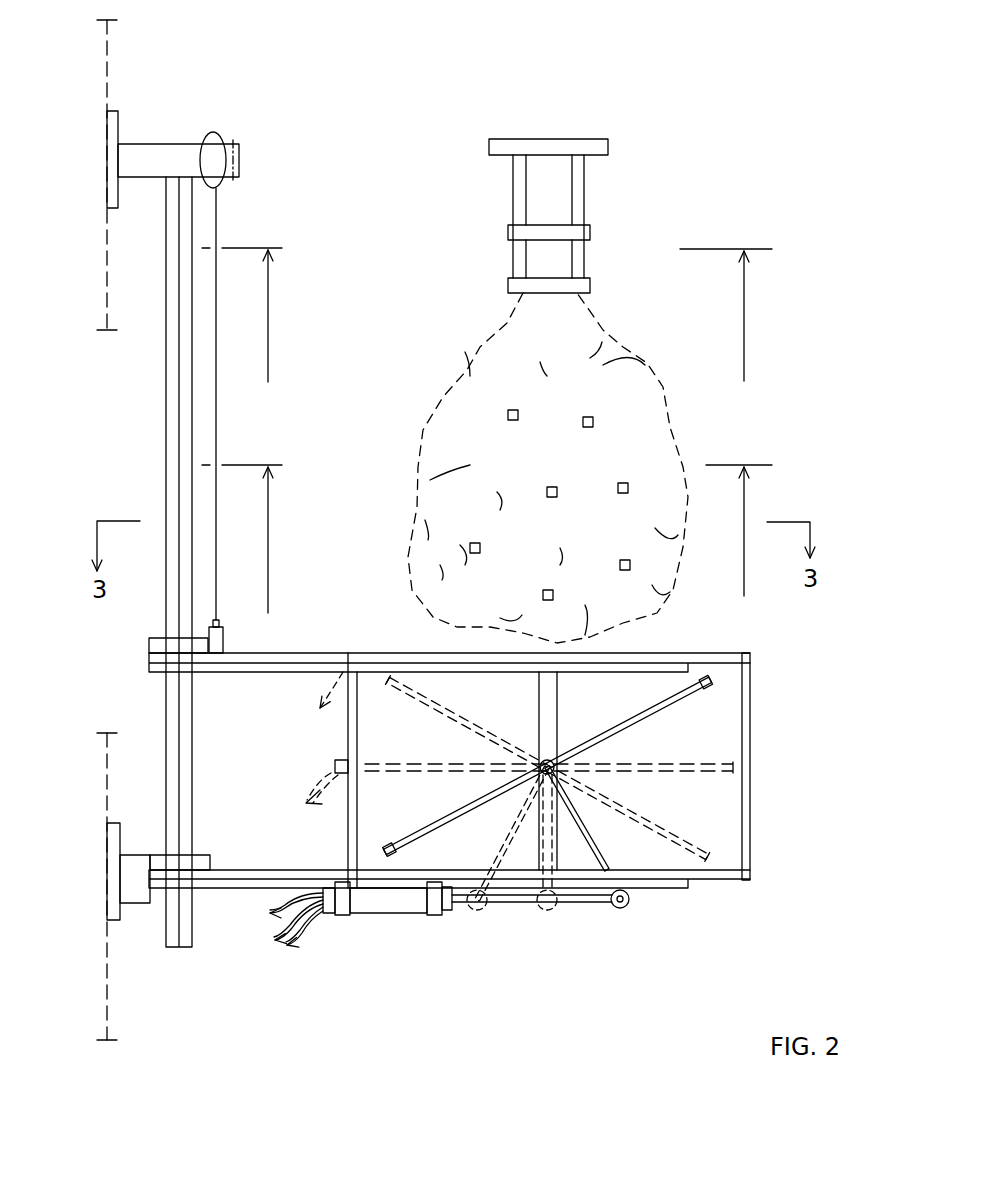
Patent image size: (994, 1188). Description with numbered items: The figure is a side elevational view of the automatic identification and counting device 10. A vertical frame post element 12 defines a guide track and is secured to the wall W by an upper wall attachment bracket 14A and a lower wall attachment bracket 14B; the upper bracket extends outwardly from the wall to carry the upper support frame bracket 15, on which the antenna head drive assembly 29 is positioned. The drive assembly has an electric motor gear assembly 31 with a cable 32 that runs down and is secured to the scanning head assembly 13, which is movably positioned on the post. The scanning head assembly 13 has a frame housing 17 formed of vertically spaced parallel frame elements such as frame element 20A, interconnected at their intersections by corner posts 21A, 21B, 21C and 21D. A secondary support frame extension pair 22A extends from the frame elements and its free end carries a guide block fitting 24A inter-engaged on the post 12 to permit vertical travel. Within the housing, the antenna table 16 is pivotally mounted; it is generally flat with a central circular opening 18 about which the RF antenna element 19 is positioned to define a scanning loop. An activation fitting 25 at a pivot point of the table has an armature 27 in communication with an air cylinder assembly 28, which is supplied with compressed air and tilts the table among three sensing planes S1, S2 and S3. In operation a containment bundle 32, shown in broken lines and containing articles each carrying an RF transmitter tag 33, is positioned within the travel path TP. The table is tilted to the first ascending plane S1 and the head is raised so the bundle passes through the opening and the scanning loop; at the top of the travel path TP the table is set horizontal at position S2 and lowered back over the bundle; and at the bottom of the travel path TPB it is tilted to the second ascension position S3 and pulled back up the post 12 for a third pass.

The automatic identification and counting device 10 is at (758, 212).
The frame post element 12 is at (170, 413).
The scanning head assembly 13 is at (778, 660).
The upper wall attachment bracket 14A is at (108, 125).
The lower wall attachment bracket 14B is at (110, 880).
The upper support frame bracket 15 is at (240, 156).
The antenna table 16 is at (647, 712).
The frame housing 17 is at (755, 733).
The circular opening 18 is at (602, 762).
The RF antenna element 19 is at (386, 845).
The frame element 20A is at (728, 655).
The corner post 21A is at (348, 850).
The corner post 21B is at (747, 858).
The corner post 21C is at (350, 795).
The corner post 21D is at (748, 772).
The secondary support frame extension pair 22A is at (387, 662).
The guide block fitting 24A is at (163, 674).
The activation fitting 25 is at (546, 759).
The armature 27 is at (522, 903).
The air cylinder assembly 28 is at (363, 918).
The antenna head drive assembly 29 is at (222, 130).
The electric motor gear assembly 31 is at (226, 184).
The cable / containment bundle 32 is at (222, 229).
The RF transmitter tag 33 is at (628, 487).
The wall W is at (108, 192).
The travel path TP is at (748, 335).
The bottom of travel path TPB is at (240, 890).
The first ascending sensing plane S1 is at (706, 690).
The vertical descension sensing plane S2 is at (713, 761).
The second vertical ascension sensing plane S3 is at (680, 848).